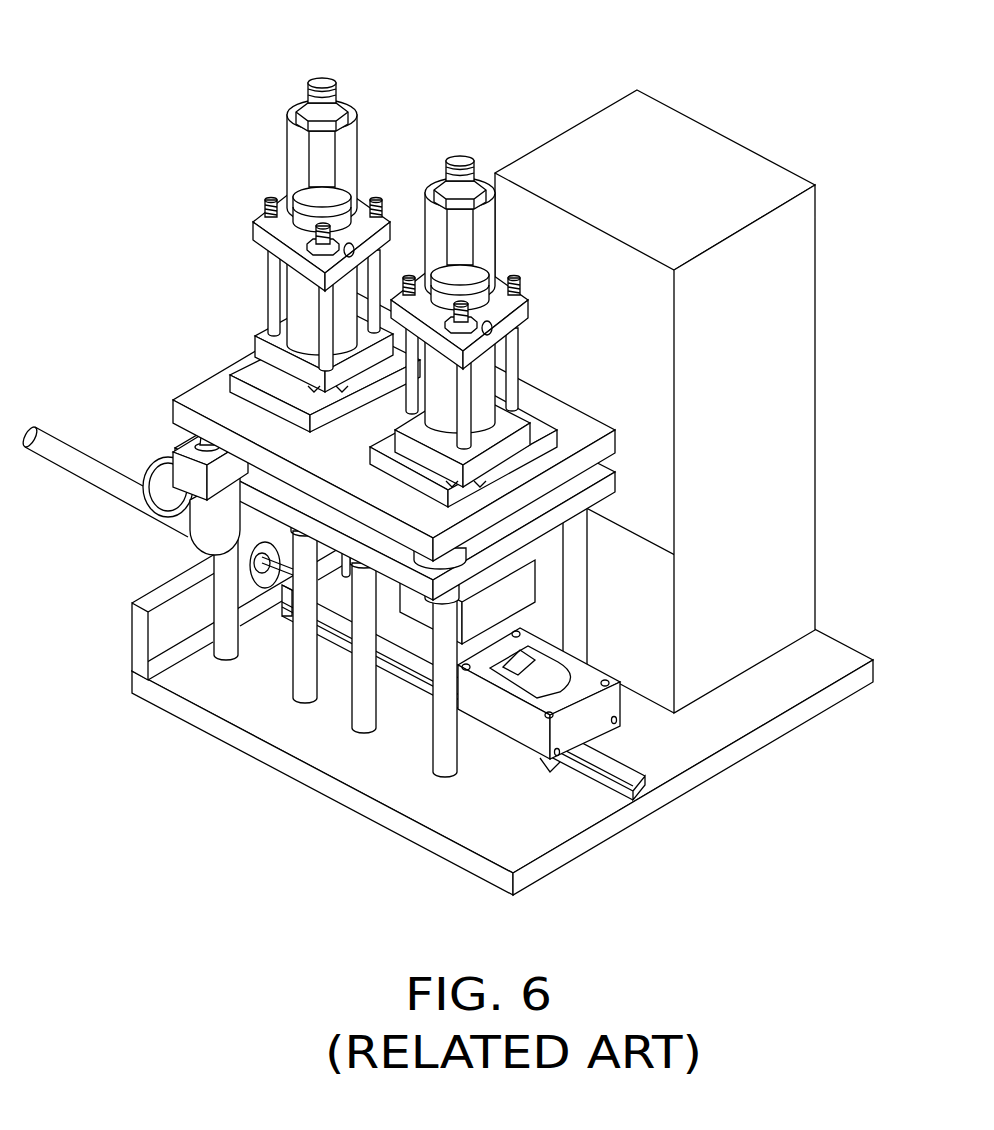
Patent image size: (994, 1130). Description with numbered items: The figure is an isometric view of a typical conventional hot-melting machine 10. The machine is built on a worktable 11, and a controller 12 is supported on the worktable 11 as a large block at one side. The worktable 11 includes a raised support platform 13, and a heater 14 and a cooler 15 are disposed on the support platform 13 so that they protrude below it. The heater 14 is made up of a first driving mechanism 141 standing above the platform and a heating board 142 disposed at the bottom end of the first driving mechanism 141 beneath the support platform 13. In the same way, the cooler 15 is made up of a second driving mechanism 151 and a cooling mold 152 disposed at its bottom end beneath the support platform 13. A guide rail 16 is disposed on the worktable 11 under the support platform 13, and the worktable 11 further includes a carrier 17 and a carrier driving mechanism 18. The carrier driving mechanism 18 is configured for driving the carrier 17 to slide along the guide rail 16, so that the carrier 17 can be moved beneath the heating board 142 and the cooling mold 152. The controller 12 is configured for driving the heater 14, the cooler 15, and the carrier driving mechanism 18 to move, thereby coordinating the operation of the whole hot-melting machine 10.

The hot-melting machine 10 is at (502, 42).
The worktable 11 is at (328, 745).
The controller 12 is at (790, 292).
The support platform 13 is at (540, 487).
The heater 14 is at (635, 324).
The first driving mechanism 141 is at (653, 388).
The heating board 142 is at (523, 590).
The cooler 15 is at (301, 255).
The second driving mechanism 151 is at (300, 304).
The cooling mold 152 is at (205, 543).
The guide rail 16 is at (633, 787).
The carrier 17 is at (608, 702).
The carrier driving mechanism 18 is at (58, 442).